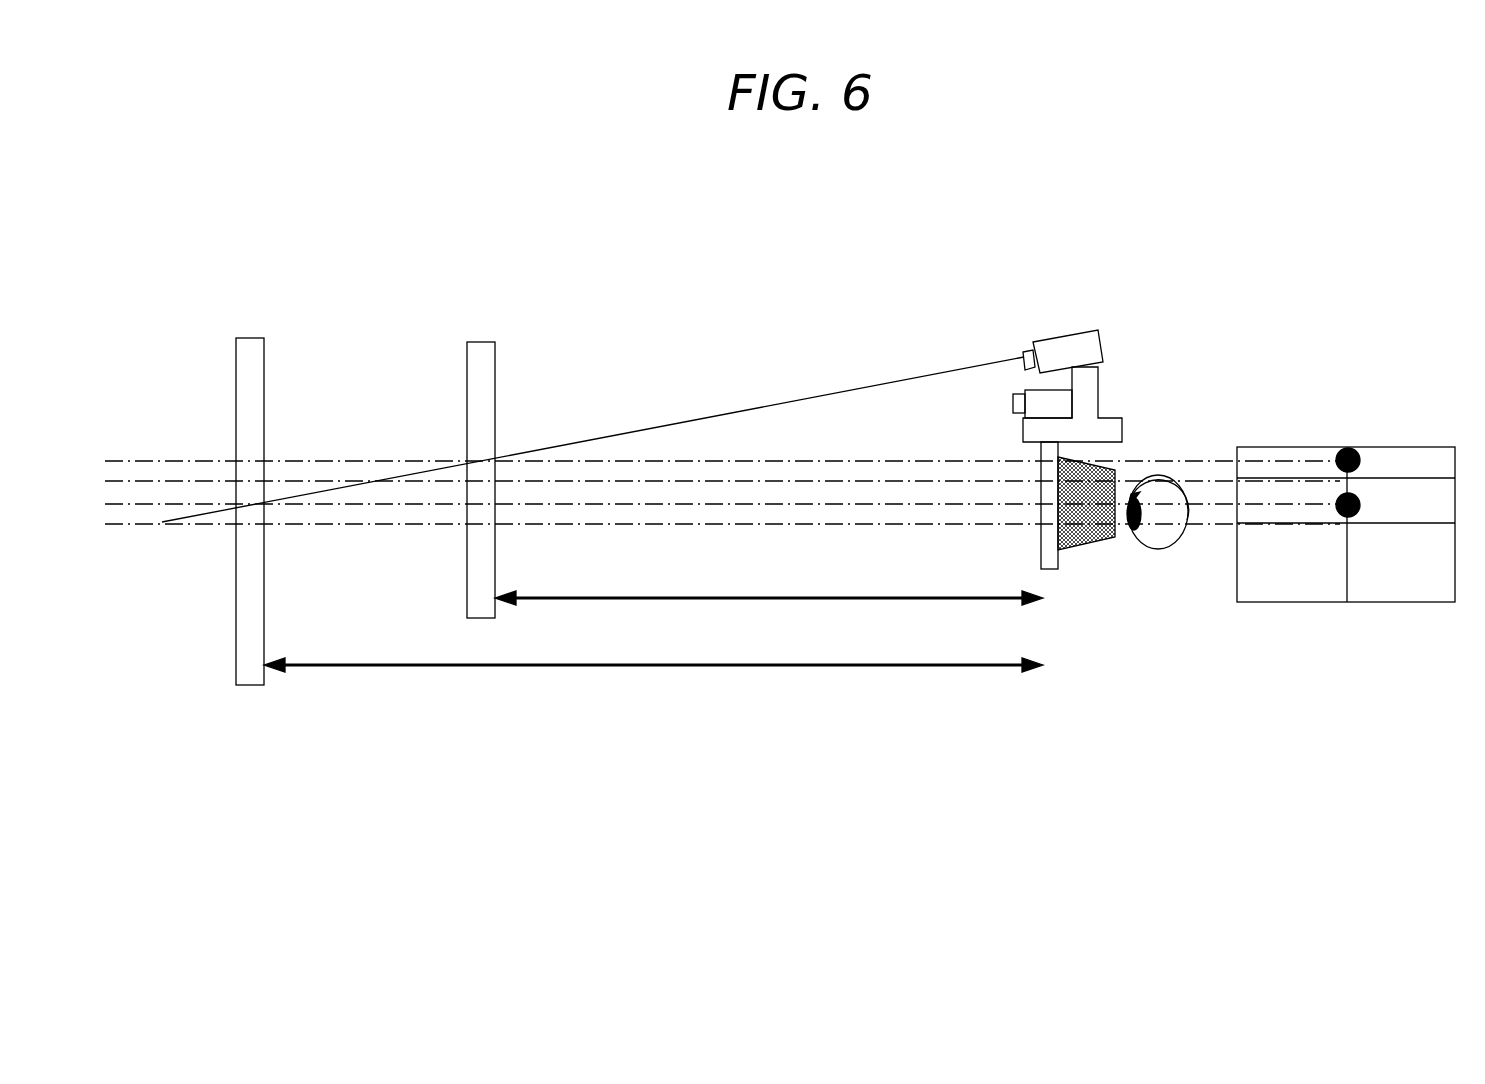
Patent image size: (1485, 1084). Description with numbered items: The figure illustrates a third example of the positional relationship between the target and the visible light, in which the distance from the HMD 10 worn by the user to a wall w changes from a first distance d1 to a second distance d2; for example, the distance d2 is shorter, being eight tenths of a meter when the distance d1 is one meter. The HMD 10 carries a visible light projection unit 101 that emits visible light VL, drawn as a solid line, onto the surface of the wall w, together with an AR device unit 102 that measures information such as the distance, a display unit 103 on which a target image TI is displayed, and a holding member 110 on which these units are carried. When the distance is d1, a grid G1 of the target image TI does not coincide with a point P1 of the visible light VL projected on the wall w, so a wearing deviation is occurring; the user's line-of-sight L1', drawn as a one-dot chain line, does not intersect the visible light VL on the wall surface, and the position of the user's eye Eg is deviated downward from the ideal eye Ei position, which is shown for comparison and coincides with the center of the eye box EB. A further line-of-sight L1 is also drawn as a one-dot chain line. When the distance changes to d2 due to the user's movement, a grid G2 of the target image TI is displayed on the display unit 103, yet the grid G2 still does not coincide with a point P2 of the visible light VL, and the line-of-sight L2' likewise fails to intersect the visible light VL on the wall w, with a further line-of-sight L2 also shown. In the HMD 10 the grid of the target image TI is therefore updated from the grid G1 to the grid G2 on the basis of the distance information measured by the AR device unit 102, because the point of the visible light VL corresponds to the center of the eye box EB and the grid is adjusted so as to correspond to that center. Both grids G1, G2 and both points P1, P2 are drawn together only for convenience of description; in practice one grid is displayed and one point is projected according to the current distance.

The wall w is at (483, 342).
The HMD 10 is at (1056, 480).
The visible light projection unit 101 is at (1086, 332).
The AR device unit 102 is at (1013, 403).
The display unit 103 is at (1040, 547).
The holding member 110 is at (1098, 388).
The visible light VL is at (595, 438).
The first line of sight L1 is at (722, 567).
The line-of-sight L1' is at (722, 577).
The second line of sight L2 is at (722, 523).
The line-of-sight L2' is at (722, 533).
The distance d1 is at (653, 652).
The distance d2 is at (769, 586).
The eye box EB is at (1122, 538).
The eye Eg is at (1158, 549).
The ideal eye Ei is at (1153, 476).
The target image TI is at (1405, 447).
The grid G1 is at (1290, 524).
The grid G2 is at (1303, 478).
The point P1 is at (1355, 522).
The point P2 is at (1352, 452).